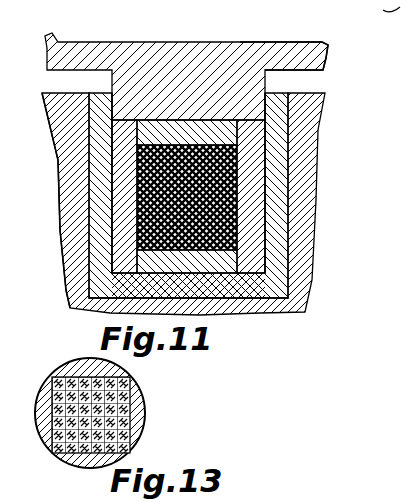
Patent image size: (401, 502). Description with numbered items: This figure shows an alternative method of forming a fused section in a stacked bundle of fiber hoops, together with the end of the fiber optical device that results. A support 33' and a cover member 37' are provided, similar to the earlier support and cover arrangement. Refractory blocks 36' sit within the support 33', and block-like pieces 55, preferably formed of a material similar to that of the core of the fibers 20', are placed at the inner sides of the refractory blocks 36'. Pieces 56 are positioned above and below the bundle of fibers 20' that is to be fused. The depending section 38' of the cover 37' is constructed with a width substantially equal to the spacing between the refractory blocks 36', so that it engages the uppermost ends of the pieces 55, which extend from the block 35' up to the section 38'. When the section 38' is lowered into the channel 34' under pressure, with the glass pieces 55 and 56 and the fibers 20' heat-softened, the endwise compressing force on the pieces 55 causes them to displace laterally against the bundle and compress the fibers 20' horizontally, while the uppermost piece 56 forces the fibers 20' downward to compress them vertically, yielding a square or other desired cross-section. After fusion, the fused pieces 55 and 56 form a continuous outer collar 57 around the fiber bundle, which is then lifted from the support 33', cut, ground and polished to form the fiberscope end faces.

In FIG. 11, the fibers 20' is at (251, 197).
In FIG. 13, the fibers 20' is at (122, 410).
In FIG. 11, the support 33' is at (205, 204).
In FIG. 11, the channel 34' is at (61, 200).
In FIG. 11, the block 35' is at (188, 316).
In FIG. 11, the refractory blocks 36' is at (193, 195).
In FIG. 11, the cover member 37' is at (284, 41).
In FIG. 11, the depending section 38' is at (186, 64).
In FIG. 11, the block-like pieces 55 is at (112, 160).
In FIG. 11, the pieces 56 is at (212, 128).
In FIG. 13, the outer collar 57 is at (140, 412).